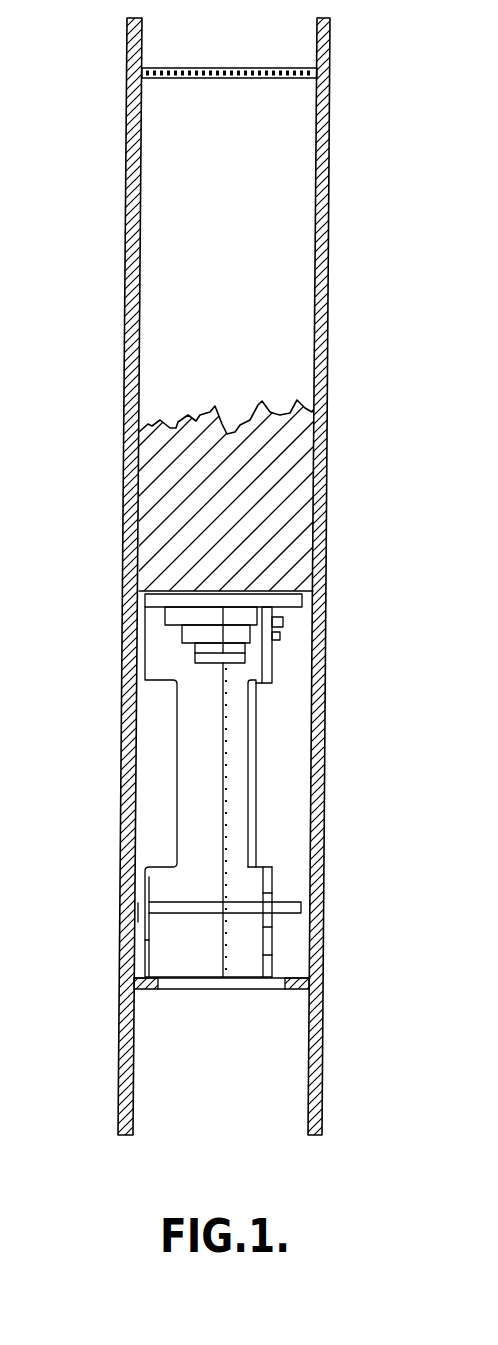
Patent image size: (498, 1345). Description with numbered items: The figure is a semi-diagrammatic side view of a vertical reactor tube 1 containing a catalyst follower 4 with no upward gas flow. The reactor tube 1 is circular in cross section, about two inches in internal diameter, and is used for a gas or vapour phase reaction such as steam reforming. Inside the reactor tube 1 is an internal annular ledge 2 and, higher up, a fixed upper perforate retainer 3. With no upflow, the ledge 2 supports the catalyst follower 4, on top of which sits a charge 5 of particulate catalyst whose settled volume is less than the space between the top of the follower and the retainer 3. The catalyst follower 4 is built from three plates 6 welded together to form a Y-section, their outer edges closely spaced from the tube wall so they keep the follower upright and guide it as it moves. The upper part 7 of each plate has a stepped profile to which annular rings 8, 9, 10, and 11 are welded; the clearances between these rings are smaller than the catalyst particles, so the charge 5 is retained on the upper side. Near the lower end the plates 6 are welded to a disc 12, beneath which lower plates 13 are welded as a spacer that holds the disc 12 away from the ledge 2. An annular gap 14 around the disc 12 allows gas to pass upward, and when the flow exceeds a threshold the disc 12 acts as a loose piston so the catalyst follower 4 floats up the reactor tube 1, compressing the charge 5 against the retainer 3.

The vertical reactor tube 1 is at (318, 1095).
The internal annular ledge 2 is at (293, 988).
The upper perforate retainer 3 is at (197, 67).
The catalyst follower 4 is at (243, 797).
The charge of particulate catalyst 5 is at (213, 467).
The plates 6 is at (237, 738).
The upper part of plate 7 is at (167, 654).
The annular ring 8 is at (287, 602).
The annular ring 9 is at (283, 622).
The annular ring 10 is at (283, 636).
The annular ring 11 is at (222, 656).
The disc 12 is at (293, 912).
The lower plates 13 is at (140, 947).
The annular gap 14 is at (138, 911).